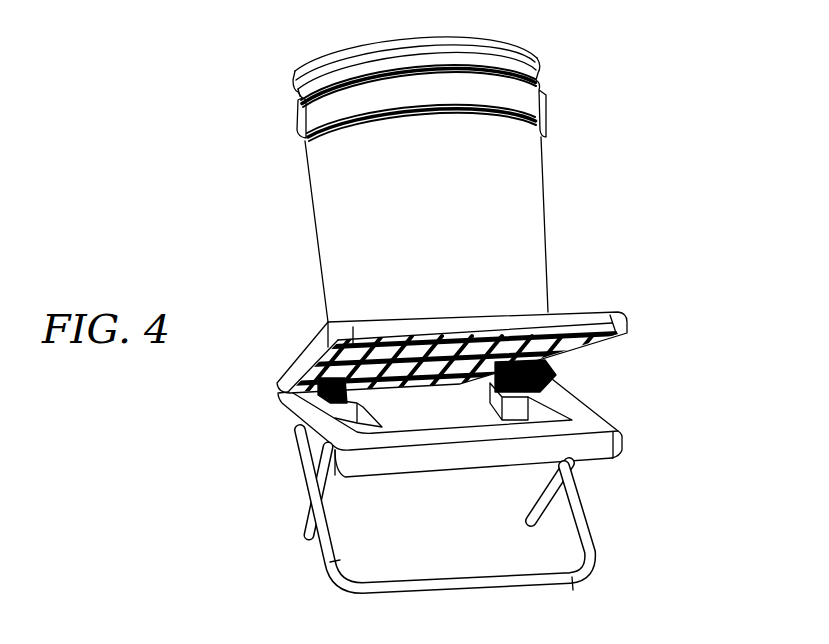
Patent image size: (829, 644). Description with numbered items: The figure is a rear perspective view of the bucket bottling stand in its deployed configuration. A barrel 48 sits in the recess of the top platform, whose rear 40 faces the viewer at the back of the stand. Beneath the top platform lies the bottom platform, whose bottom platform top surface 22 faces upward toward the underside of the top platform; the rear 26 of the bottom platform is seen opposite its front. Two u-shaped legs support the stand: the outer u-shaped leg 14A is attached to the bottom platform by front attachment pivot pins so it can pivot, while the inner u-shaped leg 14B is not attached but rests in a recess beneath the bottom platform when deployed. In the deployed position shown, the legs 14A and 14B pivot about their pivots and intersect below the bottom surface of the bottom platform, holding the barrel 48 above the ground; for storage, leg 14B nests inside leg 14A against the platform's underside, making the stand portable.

The barrel 48 is at (532, 182).
The rear of top platform 40 is at (590, 320).
The bottom platform top surface 22 is at (479, 432).
The rear of bottom platform 26 is at (582, 453).
The inner u-shaped leg 14B is at (535, 508).
The outer u-shaped leg 14A is at (590, 535).